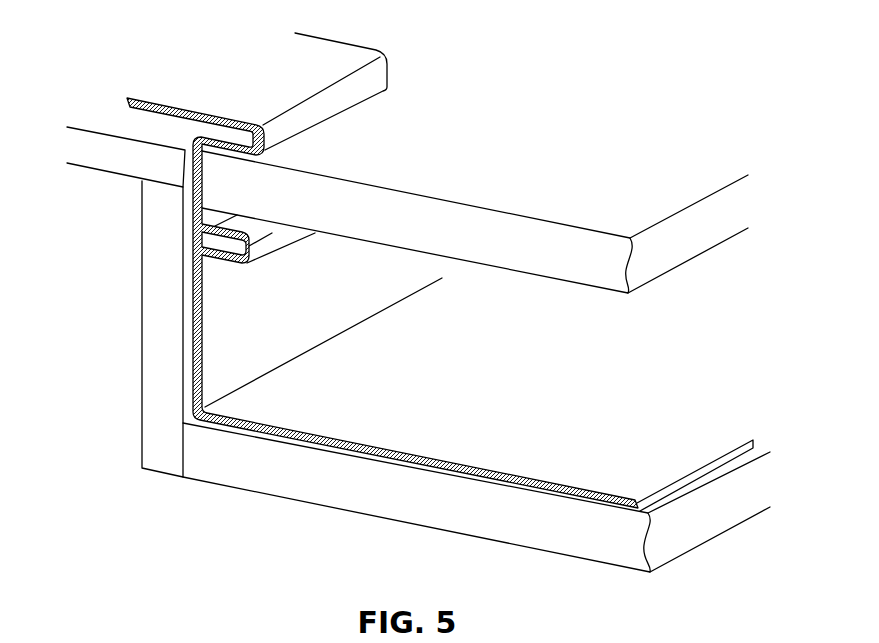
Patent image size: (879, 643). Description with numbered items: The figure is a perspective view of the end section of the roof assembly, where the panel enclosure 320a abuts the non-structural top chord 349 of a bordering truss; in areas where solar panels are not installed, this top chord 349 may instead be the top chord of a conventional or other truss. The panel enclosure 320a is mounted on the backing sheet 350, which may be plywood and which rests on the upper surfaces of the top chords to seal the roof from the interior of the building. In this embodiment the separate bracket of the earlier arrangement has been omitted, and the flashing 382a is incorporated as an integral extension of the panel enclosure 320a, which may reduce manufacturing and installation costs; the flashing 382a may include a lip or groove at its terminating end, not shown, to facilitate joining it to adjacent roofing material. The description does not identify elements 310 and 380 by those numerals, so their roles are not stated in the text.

The shelf panel 310 is at (660, 260).
The panel enclosure 320a is at (680, 455).
The non-structural top chord 349 is at (153, 416).
The backing sheet 350 is at (280, 477).
The top panel 380 is at (105, 162).
The flashing 382a is at (360, 58).